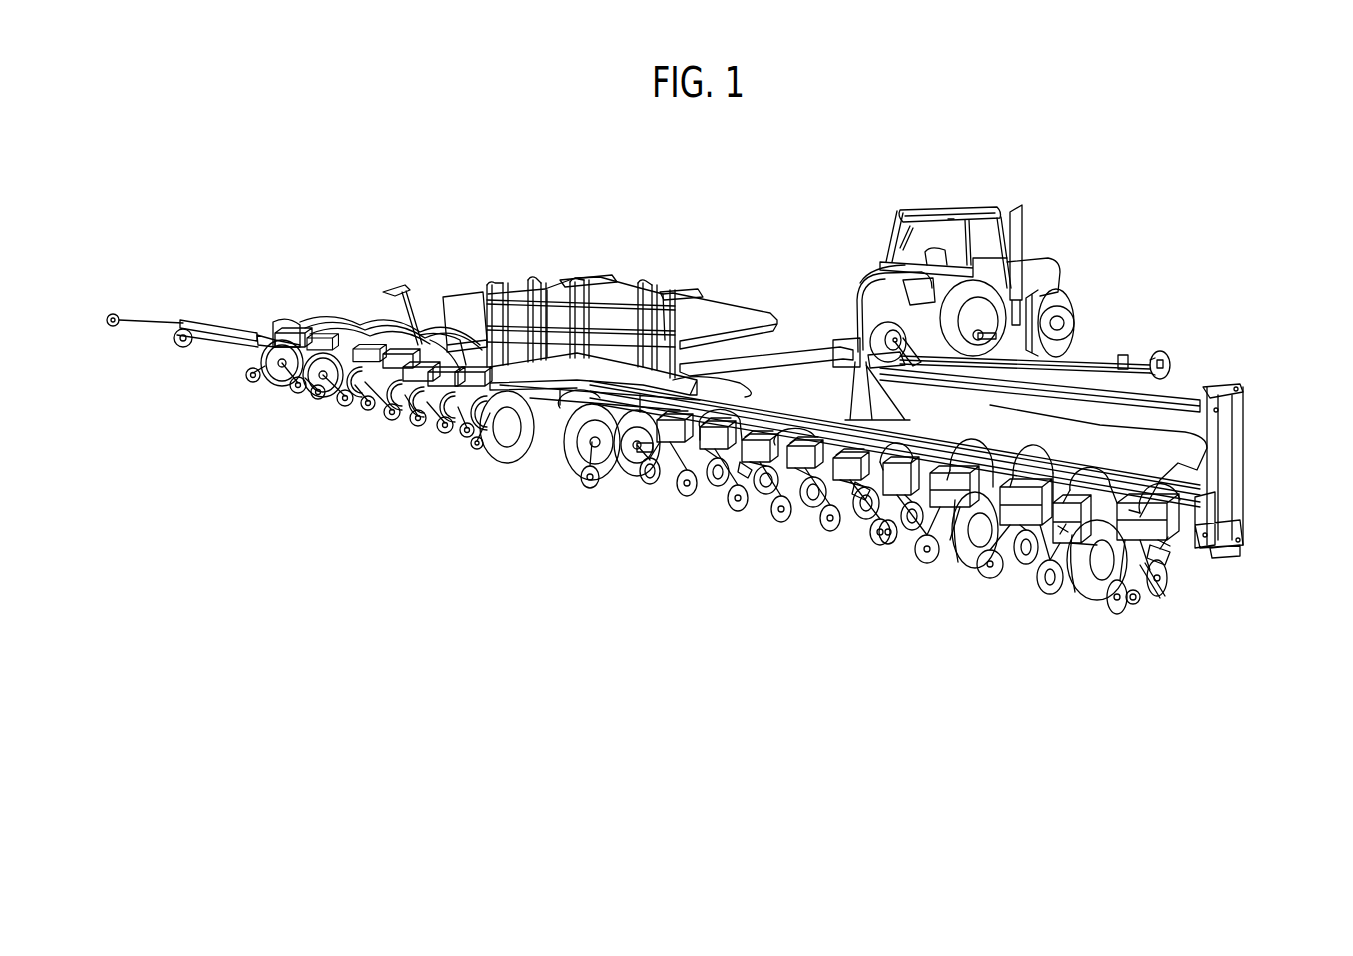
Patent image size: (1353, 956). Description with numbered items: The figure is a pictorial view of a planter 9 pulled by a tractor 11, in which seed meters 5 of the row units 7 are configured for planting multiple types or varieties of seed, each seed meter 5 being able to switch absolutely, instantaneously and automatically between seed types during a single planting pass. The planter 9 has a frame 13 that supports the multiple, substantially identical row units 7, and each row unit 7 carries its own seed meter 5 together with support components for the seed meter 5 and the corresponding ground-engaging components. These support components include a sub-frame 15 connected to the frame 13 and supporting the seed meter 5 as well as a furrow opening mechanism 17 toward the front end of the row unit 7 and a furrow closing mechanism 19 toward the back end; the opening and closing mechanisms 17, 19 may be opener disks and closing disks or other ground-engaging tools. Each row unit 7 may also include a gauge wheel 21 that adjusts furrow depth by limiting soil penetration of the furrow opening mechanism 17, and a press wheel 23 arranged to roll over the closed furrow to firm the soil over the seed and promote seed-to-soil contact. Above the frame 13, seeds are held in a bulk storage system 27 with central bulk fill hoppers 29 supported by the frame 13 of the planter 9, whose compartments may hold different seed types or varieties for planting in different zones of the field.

The seed meter 5 is at (1063, 530).
The row unit 7 is at (238, 382).
The planter 9 is at (1262, 469).
The tractor 11 is at (1041, 257).
The frame 13 is at (768, 430).
The sub-frame 15 is at (745, 468).
The furrow opening mechanism 17 is at (1168, 592).
The furrow closing mechanism 19 is at (1143, 613).
The gauge wheel 21 is at (1168, 594).
The press wheel 23 is at (1117, 610).
The bulk storage system 27 is at (621, 299).
The bulk fill hopper 29 is at (622, 288).